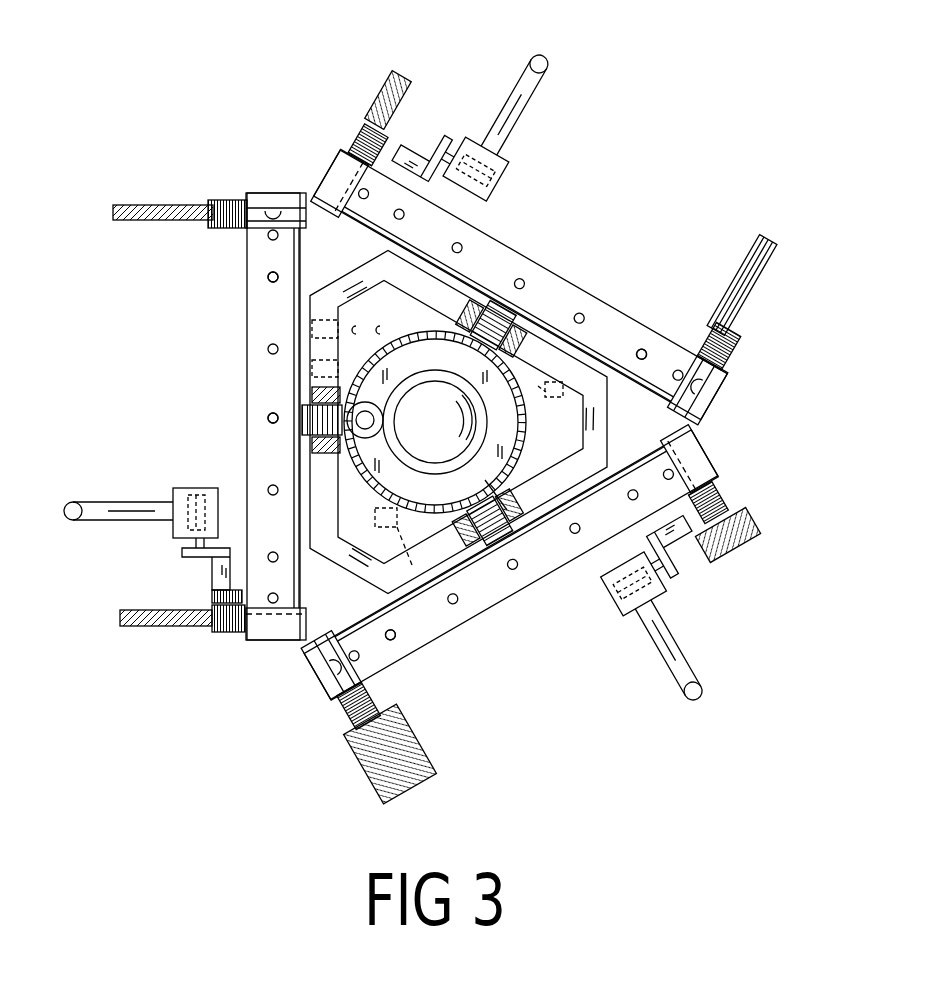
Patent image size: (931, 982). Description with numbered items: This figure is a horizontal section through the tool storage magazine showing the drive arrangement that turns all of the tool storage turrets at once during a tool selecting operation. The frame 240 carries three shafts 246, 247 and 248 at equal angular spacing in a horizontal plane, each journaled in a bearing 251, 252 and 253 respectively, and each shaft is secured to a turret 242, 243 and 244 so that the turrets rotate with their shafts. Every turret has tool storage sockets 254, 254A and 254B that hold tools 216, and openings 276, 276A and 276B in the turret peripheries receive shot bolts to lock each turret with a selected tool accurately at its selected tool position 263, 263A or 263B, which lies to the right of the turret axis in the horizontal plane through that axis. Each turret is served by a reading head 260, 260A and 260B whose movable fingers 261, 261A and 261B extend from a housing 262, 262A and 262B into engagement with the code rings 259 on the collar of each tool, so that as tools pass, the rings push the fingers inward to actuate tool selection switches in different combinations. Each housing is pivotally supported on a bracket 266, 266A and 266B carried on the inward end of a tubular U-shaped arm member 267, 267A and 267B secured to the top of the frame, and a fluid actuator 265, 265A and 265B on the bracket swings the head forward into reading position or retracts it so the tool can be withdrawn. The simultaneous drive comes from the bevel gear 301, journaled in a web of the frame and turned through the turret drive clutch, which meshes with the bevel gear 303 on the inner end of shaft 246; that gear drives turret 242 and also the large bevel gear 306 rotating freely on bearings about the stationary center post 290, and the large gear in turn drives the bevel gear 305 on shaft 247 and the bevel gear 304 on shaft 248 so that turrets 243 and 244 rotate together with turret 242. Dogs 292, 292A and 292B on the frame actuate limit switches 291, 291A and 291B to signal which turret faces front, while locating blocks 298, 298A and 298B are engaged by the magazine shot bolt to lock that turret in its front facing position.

The tool 216 is at (108, 205).
The frame 240 is at (590, 418).
The tool storage turret 242 is at (260, 195).
The tool storage turret 243 is at (578, 284).
The tool storage turret 244 is at (456, 628).
The shaft 246 is at (302, 412).
The shaft 247 is at (503, 293).
The shaft 248 is at (508, 548).
The bearing 251 is at (340, 430).
The bearing 252 is at (463, 302).
The bearing 253 is at (506, 530).
The tool storage socket 254 is at (300, 203).
The tool storage socket 254A is at (340, 163).
The tool storage socket 254B is at (333, 688).
The code ring 259 is at (222, 634).
The reading head 260 is at (162, 492).
The reading head 260A is at (450, 110).
The reading head 260B is at (672, 612).
The movable finger 261 is at (213, 600).
The movable finger 261A is at (392, 138).
The movable finger 261B is at (698, 546).
The housing 262 is at (212, 568).
The housing 262A is at (428, 145).
The housing 262B is at (678, 540).
The selected tool position 263 is at (230, 690).
The selected tool position 263A is at (328, 110).
The selected tool position 263B is at (774, 462).
The fluid actuator 265 is at (192, 482).
The fluid actuator 265A is at (502, 163).
The fluid actuator 265B is at (620, 606).
The bracket 266 is at (185, 490).
The bracket 266A is at (476, 169).
The bracket 266B is at (634, 584).
The tubular U-shaped arm member 267 is at (72, 500).
The tubular U-shaped arm member 267A is at (546, 55).
The tubular U-shaped arm member 267B is at (690, 698).
The locating opening 276 is at (268, 416).
The shot bolt receiving opening 276A is at (520, 274).
The shot bolt receiving opening 276B is at (394, 636).
The stationary center post 290 is at (435, 422).
The limit switch 291 is at (310, 332).
The limit switch 291A is at (357, 326).
The limit switch 291B is at (382, 328).
The dog 292 is at (296, 305).
The dog 292A is at (548, 407).
The dog 292B is at (469, 440).
The locating block 298 is at (300, 365).
The locating block 298A is at (565, 326).
The locating block 298B is at (448, 566).
The bevel gear 301 is at (378, 410).
The bevel gear 303 is at (375, 524).
The bevel gear 304 is at (485, 482).
The bevel gear 305 is at (478, 349).
The large bevel gear 306 is at (512, 477).